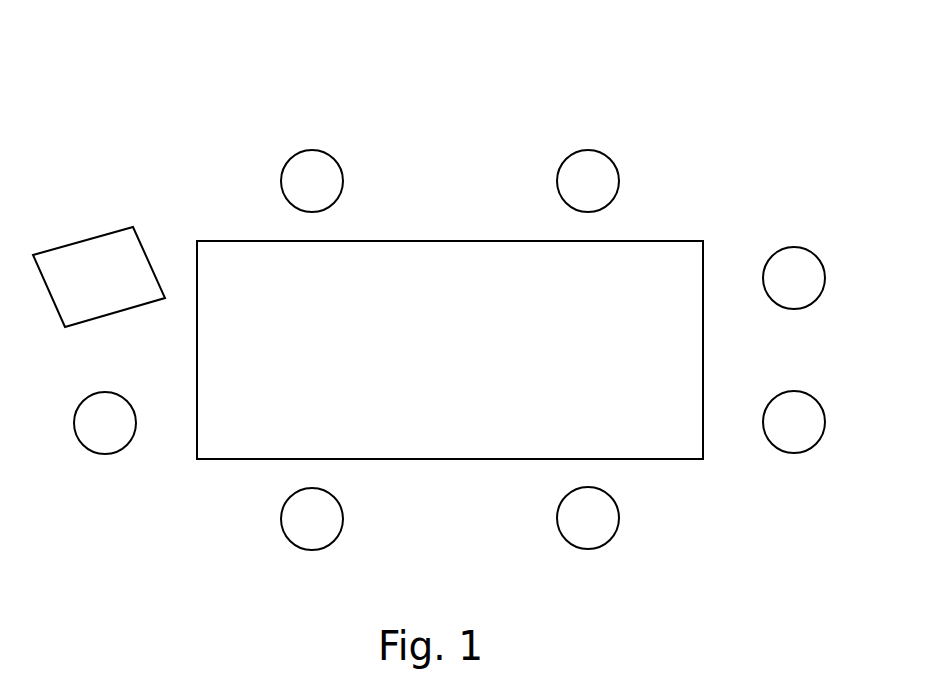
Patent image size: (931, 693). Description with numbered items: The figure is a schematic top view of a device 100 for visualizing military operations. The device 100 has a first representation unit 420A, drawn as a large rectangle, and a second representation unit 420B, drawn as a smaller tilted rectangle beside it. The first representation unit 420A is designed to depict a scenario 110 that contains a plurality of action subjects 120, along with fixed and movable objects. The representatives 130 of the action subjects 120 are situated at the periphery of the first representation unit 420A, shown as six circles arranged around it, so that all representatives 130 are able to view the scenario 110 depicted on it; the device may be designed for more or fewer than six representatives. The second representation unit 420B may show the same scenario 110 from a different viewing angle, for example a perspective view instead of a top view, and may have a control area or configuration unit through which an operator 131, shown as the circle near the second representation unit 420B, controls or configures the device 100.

The device for visualizing military operations 100 is at (278, 101).
The scenario 110 is at (507, 276).
The action subjects 120 is at (624, 280).
The representatives 130 is at (310, 160).
The operator 131 is at (106, 445).
The first representation unit 420A is at (197, 328).
The second representation unit 420B is at (83, 253).